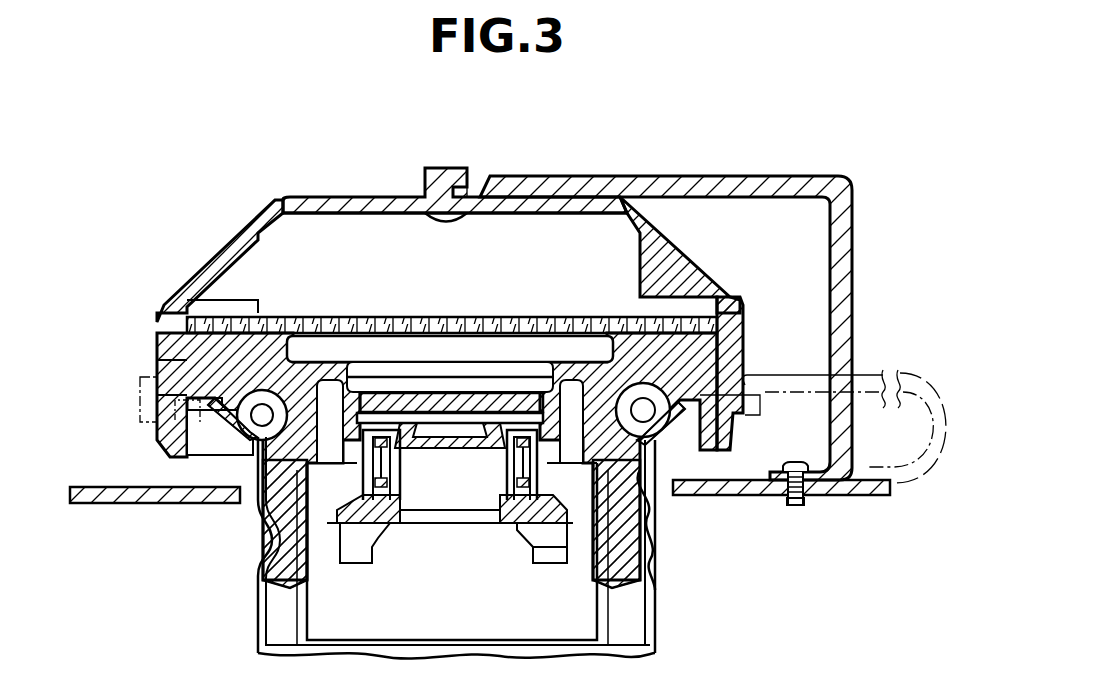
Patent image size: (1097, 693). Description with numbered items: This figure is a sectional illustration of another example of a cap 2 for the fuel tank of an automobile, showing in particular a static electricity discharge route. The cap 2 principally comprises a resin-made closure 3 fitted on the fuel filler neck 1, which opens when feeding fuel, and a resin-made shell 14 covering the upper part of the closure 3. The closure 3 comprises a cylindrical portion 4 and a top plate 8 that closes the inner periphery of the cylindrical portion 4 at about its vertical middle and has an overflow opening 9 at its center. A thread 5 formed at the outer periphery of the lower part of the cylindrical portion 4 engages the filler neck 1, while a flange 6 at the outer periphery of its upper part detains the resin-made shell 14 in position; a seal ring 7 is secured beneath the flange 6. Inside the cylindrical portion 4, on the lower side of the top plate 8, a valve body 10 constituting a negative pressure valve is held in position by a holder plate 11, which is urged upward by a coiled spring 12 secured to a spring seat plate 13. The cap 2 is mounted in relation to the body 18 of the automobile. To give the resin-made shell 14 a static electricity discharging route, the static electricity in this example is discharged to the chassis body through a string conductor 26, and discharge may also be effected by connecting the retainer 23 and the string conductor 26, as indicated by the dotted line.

The fuel filler neck 1 is at (660, 625).
The cap 2 is at (218, 236).
The resin-made closure 3 is at (284, 610).
The cylindrical portion 4 is at (615, 505).
The thread 5 is at (627, 560).
The flange 6 is at (740, 326).
The seal ring 7 is at (250, 430).
The top plate 8 is at (362, 412).
The overflow opening 9 is at (452, 402).
The valve body 10 is at (478, 455).
The holder plate 11 is at (420, 456).
The coiled spring 12 is at (500, 505).
The spring seat plate 13 is at (575, 522).
The resin-made shell 14 is at (328, 204).
The body of an automobile 18 is at (858, 496).
The retainer 23 is at (150, 425).
The string conductor 26 is at (750, 184).